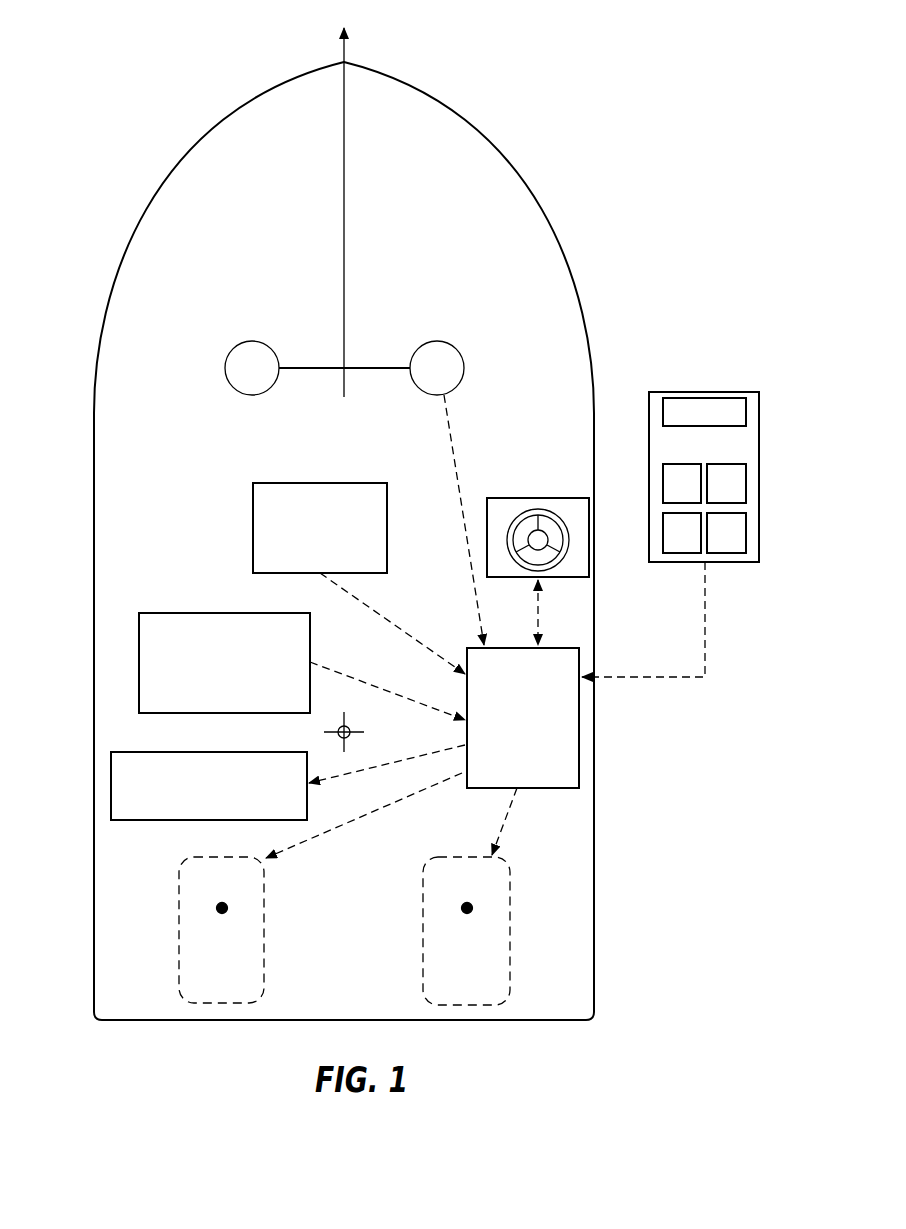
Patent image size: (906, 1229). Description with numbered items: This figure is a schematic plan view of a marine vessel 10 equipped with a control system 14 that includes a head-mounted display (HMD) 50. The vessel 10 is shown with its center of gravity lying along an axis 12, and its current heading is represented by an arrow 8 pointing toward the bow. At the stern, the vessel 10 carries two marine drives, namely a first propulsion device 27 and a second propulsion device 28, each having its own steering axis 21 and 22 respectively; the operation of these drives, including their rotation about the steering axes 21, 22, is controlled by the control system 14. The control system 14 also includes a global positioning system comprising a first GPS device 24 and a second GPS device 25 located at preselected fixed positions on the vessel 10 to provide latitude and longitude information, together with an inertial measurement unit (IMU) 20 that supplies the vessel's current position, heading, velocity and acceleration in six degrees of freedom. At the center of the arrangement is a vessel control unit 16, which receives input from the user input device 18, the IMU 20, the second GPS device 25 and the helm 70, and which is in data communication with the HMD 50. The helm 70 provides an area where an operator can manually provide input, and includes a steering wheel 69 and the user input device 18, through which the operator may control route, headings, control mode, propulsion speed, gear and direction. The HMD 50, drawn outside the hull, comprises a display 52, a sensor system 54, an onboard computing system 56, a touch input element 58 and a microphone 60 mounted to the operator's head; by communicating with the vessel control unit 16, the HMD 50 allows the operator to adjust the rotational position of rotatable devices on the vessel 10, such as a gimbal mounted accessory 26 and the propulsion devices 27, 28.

The arrow 8 is at (344, 190).
The marine vessel 10 is at (513, 162).
The axis 12 is at (352, 738).
The control system 14 is at (128, 730).
The vessel control unit 16 is at (580, 697).
The user input device 18 is at (320, 483).
The inertial measurement unit 20 is at (197, 613).
The steering axis 21 is at (217, 907).
The steering axis 22 is at (470, 907).
The first GPS device 24 is at (246, 343).
The second GPS device 25 is at (455, 344).
The gimbal mounted accessory 26 is at (157, 820).
The first propulsion device 27 is at (198, 983).
The second propulsion device 28 is at (490, 980).
The head-mounted display 50 is at (715, 392).
The display 52 is at (683, 416).
The sensor system 54 is at (663, 484).
The onboard computing system 56 is at (746, 484).
The touch input element 58 is at (663, 533).
The microphone 60 is at (746, 533).
The steering wheel 69 is at (532, 515).
The helm 70 is at (507, 498).